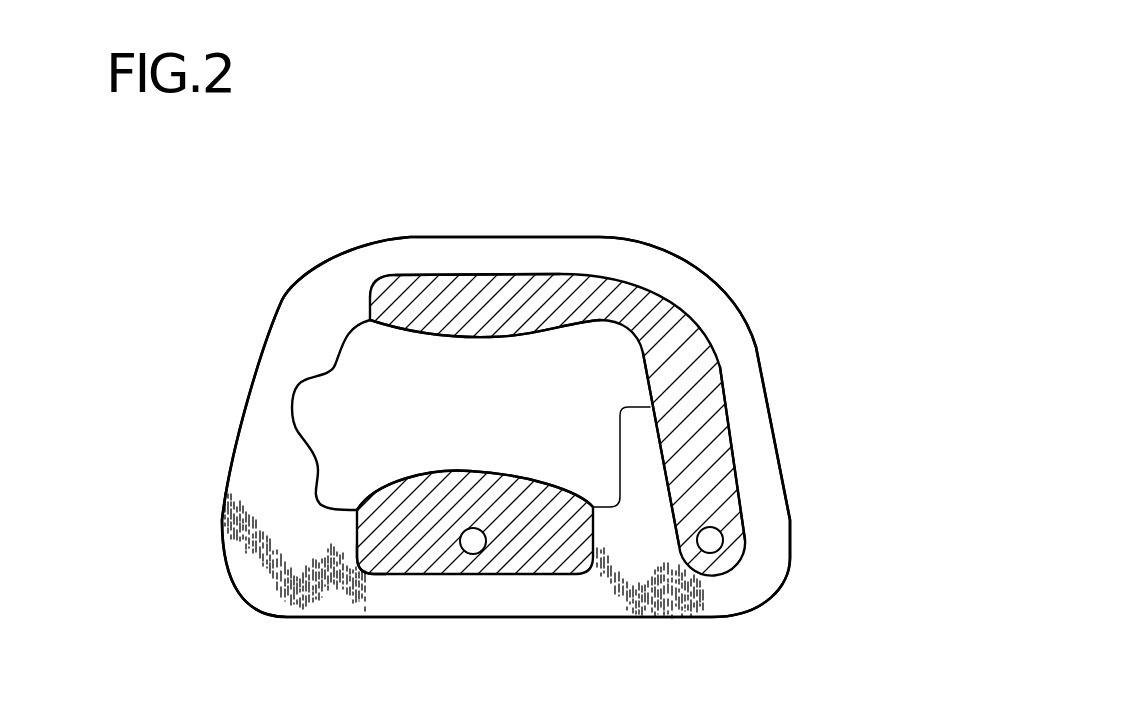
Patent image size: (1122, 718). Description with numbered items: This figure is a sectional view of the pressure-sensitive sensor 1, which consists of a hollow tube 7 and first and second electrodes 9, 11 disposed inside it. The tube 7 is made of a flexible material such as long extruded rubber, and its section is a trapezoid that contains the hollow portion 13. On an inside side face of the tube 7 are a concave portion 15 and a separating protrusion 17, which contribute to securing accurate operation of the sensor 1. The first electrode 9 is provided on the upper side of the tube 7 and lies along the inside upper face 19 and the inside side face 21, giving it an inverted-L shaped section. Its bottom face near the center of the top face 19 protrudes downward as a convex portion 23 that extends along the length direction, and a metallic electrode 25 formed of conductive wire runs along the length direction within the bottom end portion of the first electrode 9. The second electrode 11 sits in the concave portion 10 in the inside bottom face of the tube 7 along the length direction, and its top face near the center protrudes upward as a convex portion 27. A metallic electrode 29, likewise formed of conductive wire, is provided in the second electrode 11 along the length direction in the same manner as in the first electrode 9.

The pressure-sensitive sensor 1 is at (291, 283).
The hollow tube 7 is at (740, 356).
The first electrode 9 is at (712, 452).
The concave portion 10 is at (357, 563).
The second electrode 11 is at (417, 577).
The hollow portion 13 is at (608, 368).
The concave portion 15 is at (290, 410).
The separating protrusion 17 is at (655, 428).
The inside upper face 19 is at (510, 277).
The inside side face 21 is at (731, 487).
The convex portion 23 is at (477, 340).
The metallic electrode 25 is at (708, 547).
The convex portion 27 is at (490, 465).
The metallic electrode 29 is at (473, 545).